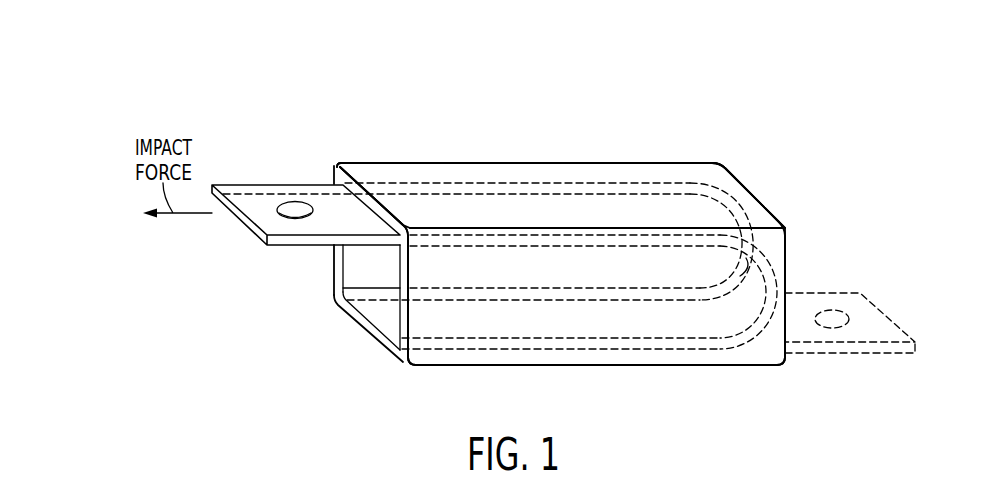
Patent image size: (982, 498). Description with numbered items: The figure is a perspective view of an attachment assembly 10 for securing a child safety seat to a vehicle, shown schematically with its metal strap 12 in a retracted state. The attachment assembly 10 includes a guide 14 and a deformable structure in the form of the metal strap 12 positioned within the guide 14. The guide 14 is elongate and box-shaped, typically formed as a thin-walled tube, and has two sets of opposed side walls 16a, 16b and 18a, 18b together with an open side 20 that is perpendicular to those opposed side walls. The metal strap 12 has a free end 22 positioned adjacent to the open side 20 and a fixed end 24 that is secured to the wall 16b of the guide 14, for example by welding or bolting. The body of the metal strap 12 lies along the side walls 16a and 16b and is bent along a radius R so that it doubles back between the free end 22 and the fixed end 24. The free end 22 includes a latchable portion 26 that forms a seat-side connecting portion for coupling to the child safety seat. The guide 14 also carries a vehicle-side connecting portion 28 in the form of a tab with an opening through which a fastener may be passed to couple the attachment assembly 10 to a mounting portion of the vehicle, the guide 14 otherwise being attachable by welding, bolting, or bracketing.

The attachment assembly 10 is at (729, 94).
The metal strap 12 is at (321, 207).
The guide 14 is at (424, 160).
The side wall 16a is at (540, 192).
The side wall 16b is at (488, 348).
The side wall 18a is at (610, 325).
The side wall 18b is at (330, 260).
The open side 20 is at (357, 272).
The free end 22 is at (238, 185).
The fixed end 24 is at (385, 310).
The latchable portion 26 is at (293, 212).
The vehicle-side connecting portion 28 is at (862, 299).
The radius R is at (707, 300).